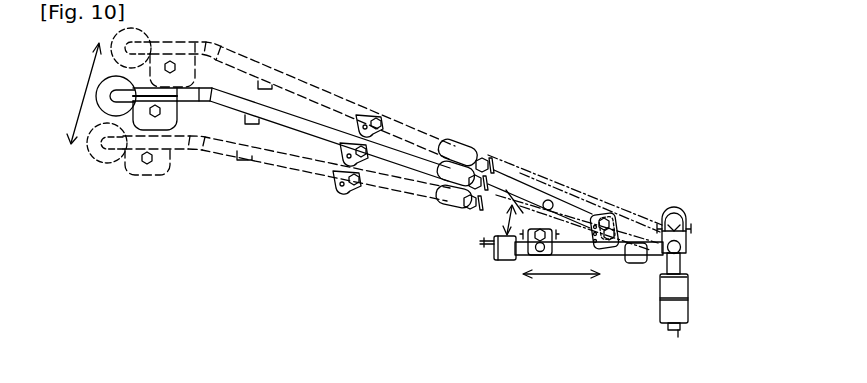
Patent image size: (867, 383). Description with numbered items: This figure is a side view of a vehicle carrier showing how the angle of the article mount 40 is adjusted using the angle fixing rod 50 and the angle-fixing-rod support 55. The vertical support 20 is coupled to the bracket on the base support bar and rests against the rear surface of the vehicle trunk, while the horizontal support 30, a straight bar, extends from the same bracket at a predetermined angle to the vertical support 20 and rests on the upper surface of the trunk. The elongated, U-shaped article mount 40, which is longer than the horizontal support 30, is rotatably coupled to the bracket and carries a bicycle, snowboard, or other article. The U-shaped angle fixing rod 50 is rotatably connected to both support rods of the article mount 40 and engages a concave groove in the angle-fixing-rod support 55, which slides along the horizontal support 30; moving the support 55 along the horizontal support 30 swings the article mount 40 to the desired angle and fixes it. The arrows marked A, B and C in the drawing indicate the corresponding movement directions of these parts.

The vertical support 20 is at (683, 268).
The horizontal support 30 is at (594, 249).
The article mount 40 is at (313, 130).
The angle fixing rod 50 is at (569, 206).
The angle-fixing-rod support 55 is at (527, 248).
The direction A is at (505, 212).
The direction B is at (84, 93).
The direction C is at (563, 277).